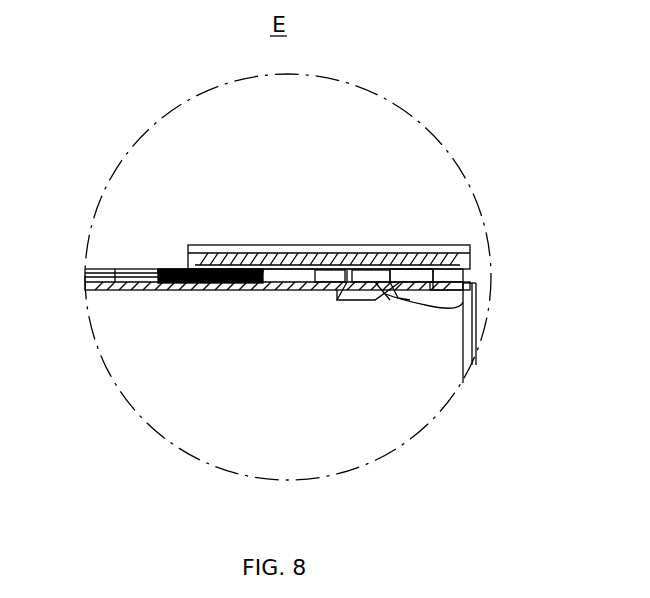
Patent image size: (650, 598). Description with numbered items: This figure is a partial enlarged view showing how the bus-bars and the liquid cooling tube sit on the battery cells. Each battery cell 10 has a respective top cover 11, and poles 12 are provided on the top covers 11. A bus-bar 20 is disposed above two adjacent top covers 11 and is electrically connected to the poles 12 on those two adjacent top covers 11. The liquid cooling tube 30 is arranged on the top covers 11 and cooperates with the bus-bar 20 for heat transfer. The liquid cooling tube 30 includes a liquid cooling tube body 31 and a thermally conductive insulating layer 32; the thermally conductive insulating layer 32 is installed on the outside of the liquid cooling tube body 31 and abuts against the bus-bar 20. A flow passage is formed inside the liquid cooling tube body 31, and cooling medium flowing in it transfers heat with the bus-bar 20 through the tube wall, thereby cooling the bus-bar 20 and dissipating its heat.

The battery cell 10 is at (443, 358).
The top cover 11 is at (290, 290).
The pole 12 is at (413, 303).
The bus-bar 20 is at (285, 267).
The liquid cooling tube 30 is at (94, 432).
The liquid cooling tube body 31 is at (157, 270).
The thermally conductive insulating layer 32 is at (178, 281).